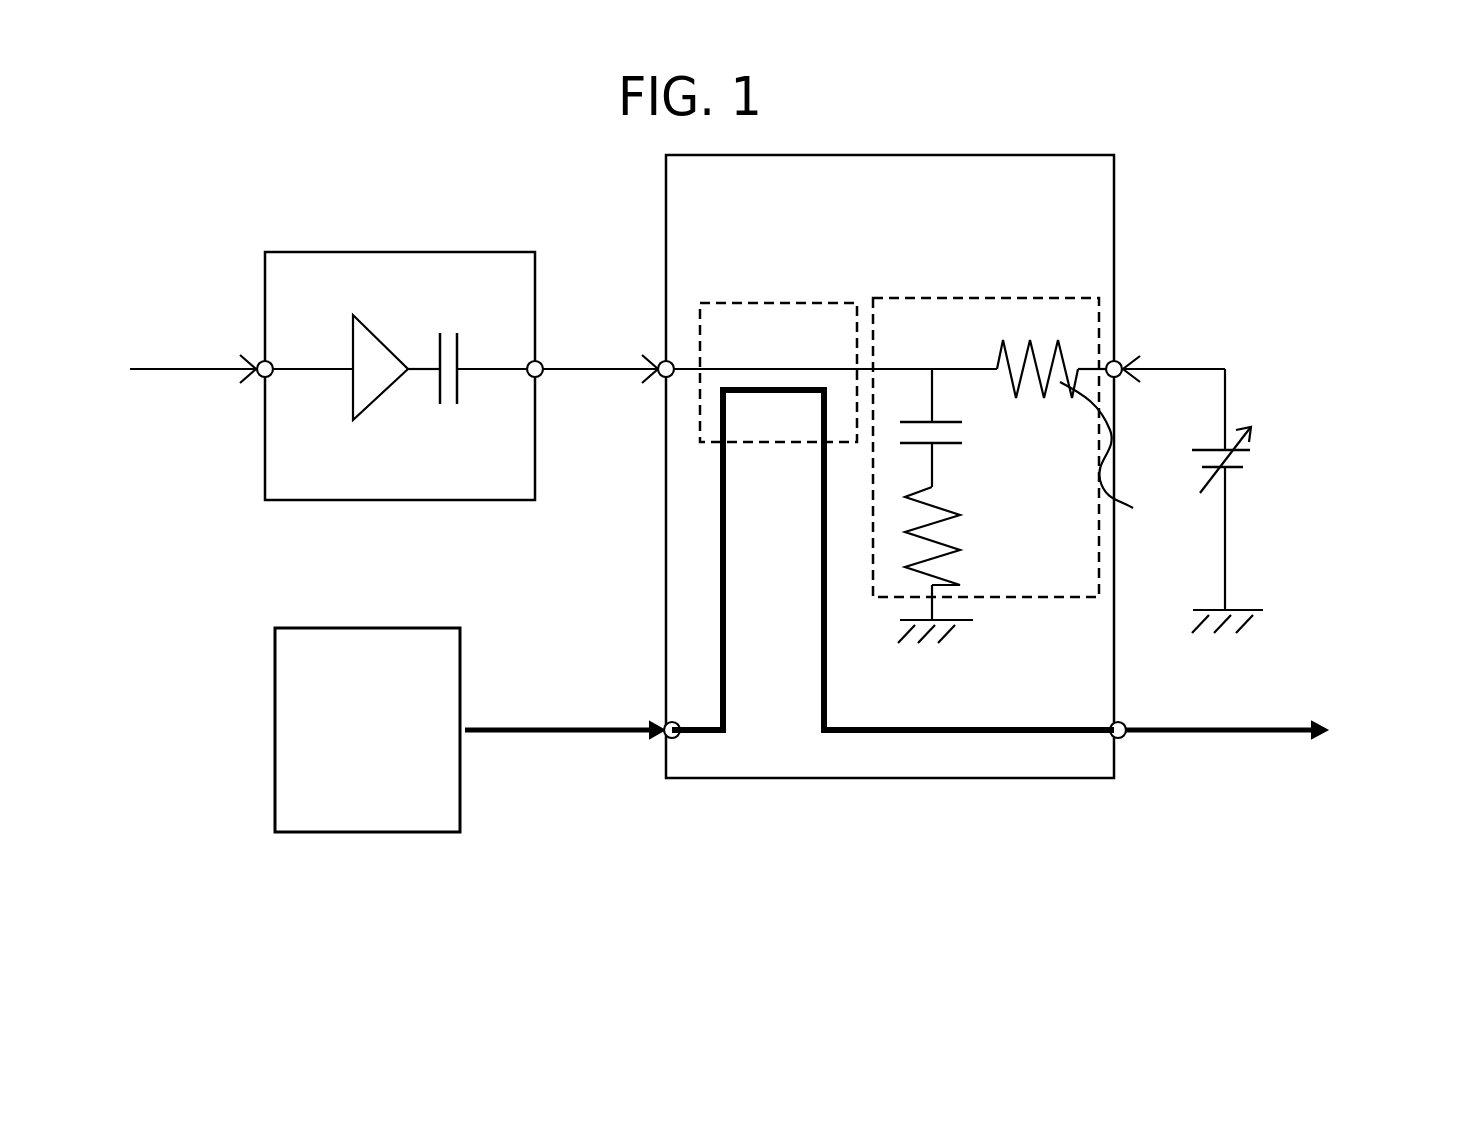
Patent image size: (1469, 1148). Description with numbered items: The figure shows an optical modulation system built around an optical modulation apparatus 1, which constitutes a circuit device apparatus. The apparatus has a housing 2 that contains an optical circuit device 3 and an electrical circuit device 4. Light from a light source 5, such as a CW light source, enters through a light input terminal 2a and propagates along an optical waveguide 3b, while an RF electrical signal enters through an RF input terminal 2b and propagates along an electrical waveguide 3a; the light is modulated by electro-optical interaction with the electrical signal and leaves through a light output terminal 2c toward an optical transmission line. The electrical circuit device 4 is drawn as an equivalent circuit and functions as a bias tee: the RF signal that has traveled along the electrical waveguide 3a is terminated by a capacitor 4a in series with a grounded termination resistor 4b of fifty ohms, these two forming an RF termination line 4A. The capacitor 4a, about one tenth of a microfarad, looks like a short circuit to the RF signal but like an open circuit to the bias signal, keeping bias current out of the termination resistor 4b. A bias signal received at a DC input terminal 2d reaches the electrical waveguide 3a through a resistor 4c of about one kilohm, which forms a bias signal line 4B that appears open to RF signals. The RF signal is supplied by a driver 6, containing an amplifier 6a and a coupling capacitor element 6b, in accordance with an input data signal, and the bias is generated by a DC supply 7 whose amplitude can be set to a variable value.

The optical modulation apparatus 1 is at (975, 790).
The housing 2 is at (895, 780).
The light input terminal 2a is at (667, 743).
The RF input terminal 2b is at (660, 374).
The light output terminal 2c is at (1126, 740).
The DC input terminal 2d is at (1120, 376).
The optical circuit device 3 is at (766, 446).
The electrical waveguide 3a is at (720, 368).
The optical waveguide 3b is at (735, 393).
The electrical circuit device 4 is at (985, 598).
The capacitor 4a is at (917, 420).
The termination resistor 4b is at (942, 507).
The RF termination line 4A is at (908, 570).
The bias signal line 4B is at (1088, 336).
The resistor 4c is at (1114, 458).
The light source 5 is at (368, 832).
The driver 6 is at (404, 252).
The amplifier 6a is at (354, 392).
The capacitor element 6b is at (462, 342).
The DC supply 7 is at (1235, 472).